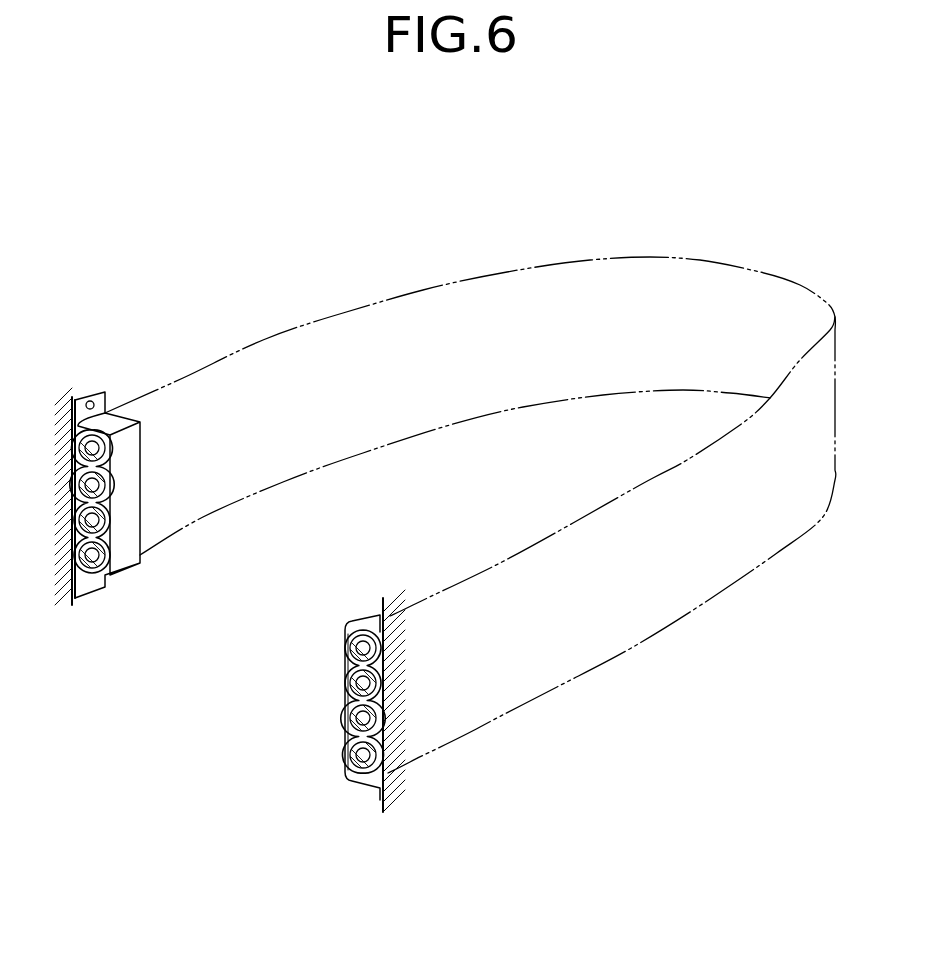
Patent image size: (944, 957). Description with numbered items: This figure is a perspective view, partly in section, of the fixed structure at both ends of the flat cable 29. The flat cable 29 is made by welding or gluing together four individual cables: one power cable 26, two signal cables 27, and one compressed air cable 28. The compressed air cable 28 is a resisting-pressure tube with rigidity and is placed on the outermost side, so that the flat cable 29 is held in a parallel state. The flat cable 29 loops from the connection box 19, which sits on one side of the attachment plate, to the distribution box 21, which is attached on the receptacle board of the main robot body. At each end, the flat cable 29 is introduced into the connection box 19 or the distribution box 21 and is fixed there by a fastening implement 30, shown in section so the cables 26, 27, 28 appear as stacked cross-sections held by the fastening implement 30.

The connection box 19 is at (62, 397).
The distribution box 21 is at (403, 811).
The power cable 26 is at (347, 708).
The signal cables 27 is at (347, 730).
The compressed air cable 28 is at (349, 666).
The flat cable 29 is at (744, 252).
The fastening implement 30 is at (130, 577).